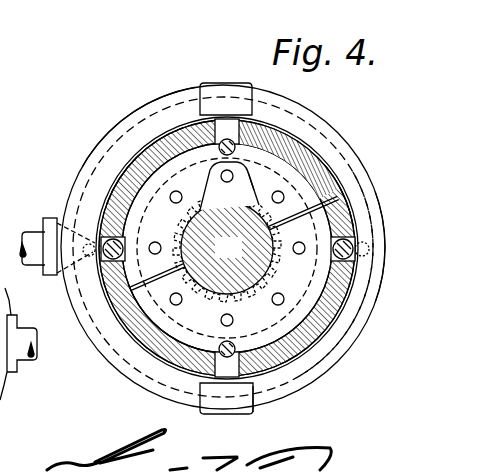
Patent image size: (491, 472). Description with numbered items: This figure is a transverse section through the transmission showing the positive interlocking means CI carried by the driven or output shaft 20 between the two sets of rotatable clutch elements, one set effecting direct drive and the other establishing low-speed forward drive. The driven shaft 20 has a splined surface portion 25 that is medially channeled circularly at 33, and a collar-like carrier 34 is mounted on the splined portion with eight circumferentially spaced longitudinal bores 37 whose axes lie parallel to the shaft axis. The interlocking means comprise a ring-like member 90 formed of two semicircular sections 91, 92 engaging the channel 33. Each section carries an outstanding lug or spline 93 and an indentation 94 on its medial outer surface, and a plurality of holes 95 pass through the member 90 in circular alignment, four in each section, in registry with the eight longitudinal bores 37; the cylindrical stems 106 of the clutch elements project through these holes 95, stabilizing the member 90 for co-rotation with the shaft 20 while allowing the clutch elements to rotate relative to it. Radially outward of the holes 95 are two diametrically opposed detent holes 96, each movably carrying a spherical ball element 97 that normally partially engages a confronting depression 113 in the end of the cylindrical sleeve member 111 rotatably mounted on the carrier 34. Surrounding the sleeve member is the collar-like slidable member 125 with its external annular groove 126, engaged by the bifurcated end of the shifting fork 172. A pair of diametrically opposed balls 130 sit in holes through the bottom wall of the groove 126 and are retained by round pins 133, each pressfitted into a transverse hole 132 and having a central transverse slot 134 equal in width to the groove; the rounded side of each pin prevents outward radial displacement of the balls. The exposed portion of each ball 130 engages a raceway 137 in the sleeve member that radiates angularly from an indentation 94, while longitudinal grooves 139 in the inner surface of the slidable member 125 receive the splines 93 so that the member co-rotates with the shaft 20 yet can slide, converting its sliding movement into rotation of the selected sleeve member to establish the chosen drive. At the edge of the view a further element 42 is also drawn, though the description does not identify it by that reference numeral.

The driven or output shaft 20 is at (240, 257).
The splined surface portion 25 is at (211, 181).
The channel 33 is at (273, 189).
The carrier 34 is at (240, 183).
The longitudinal bores 37 is at (202, 208).
The adjacent housing flange 42 is at (18, 373).
The ring-like member 90 is at (133, 147).
The semicircular section 91 is at (180, 337).
The semicircular section 92 is at (130, 286).
The lugs or splines 93 is at (197, 380).
The indentations 94 is at (378, 221).
The holes 95 is at (285, 190).
The detent holes 96 is at (213, 143).
The spherical (ball) element 97 is at (222, 140).
The cylindrical stem 106 is at (362, 205).
The cylindrical sleeve member 111 is at (348, 334).
The depression 113 is at (236, 150).
The slidable member 125 is at (262, 404).
The external annular groove 126 is at (342, 185).
The balls 130 is at (97, 230).
The transverse hole 132 is at (43, 222).
The round pin 133 is at (57, 276).
The central transverse slot 134 is at (377, 268).
The raceway 137 is at (114, 199).
The longitudinal grooves 139 is at (245, 118).
The shifting fork 172 is at (134, 108).
The positive interlocking means CI is at (276, 145).